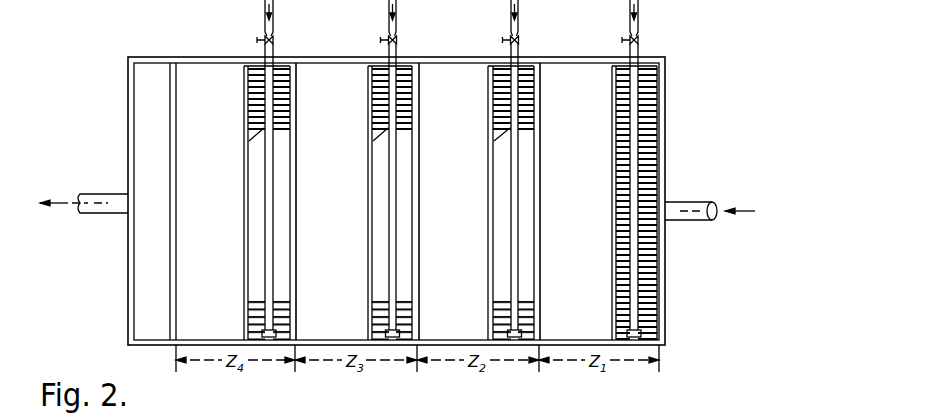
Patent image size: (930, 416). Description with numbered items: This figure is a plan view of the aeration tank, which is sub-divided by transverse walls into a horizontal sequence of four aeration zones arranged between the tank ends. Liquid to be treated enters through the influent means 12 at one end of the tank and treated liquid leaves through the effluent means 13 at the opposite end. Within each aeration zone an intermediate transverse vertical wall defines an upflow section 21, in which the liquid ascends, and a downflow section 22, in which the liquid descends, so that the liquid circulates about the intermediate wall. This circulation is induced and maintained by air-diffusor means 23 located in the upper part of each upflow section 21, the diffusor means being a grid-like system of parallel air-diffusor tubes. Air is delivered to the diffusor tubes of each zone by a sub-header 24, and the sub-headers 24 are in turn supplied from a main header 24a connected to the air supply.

The influent means 12 is at (678, 202).
The effluent means 13 is at (128, 168).
The upflow section 21 is at (256, 263).
The downflow section 22 is at (216, 212).
The air-diffusor means 23 is at (262, 128).
The sub-header 24 is at (275, 54).
The main header 24a is at (593, 0).